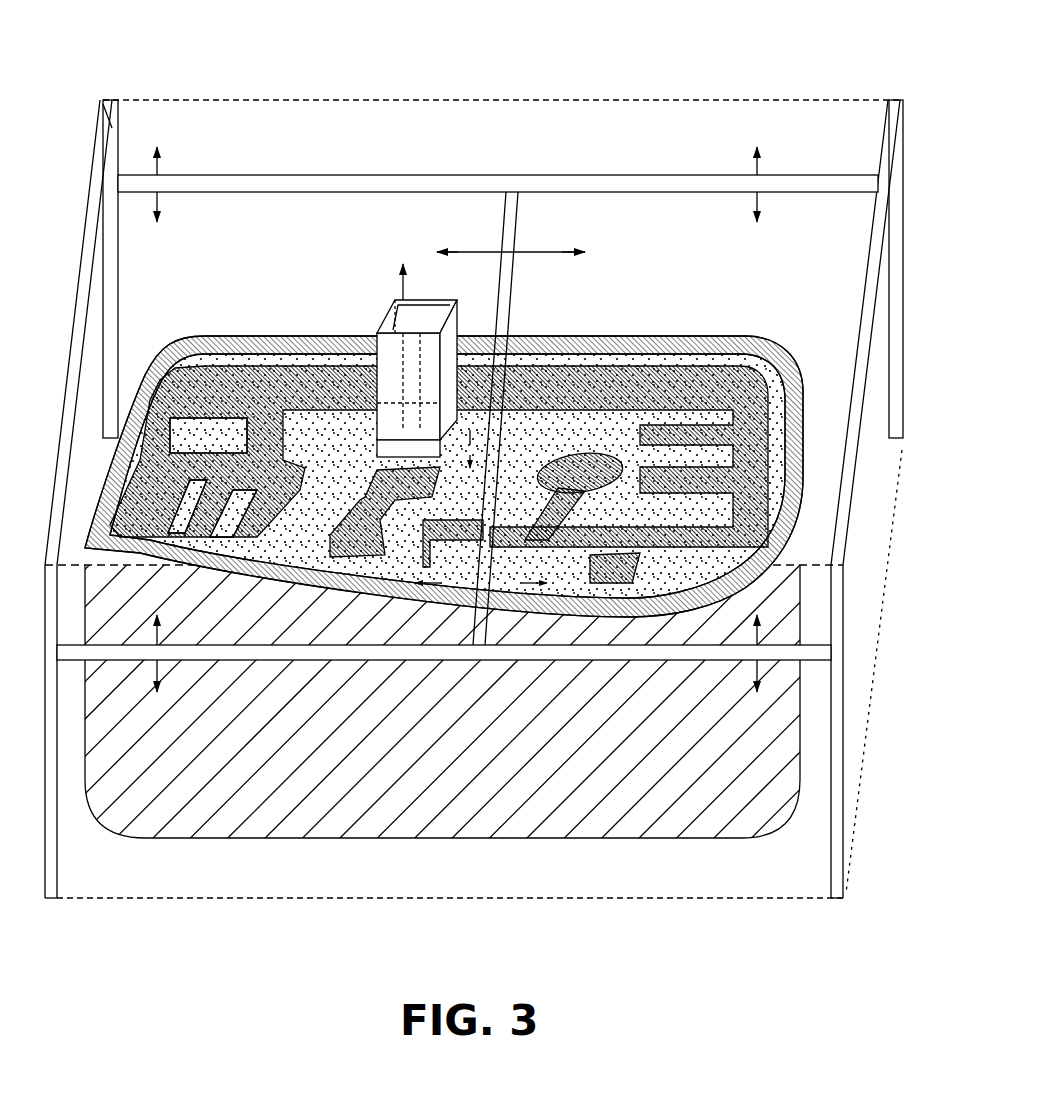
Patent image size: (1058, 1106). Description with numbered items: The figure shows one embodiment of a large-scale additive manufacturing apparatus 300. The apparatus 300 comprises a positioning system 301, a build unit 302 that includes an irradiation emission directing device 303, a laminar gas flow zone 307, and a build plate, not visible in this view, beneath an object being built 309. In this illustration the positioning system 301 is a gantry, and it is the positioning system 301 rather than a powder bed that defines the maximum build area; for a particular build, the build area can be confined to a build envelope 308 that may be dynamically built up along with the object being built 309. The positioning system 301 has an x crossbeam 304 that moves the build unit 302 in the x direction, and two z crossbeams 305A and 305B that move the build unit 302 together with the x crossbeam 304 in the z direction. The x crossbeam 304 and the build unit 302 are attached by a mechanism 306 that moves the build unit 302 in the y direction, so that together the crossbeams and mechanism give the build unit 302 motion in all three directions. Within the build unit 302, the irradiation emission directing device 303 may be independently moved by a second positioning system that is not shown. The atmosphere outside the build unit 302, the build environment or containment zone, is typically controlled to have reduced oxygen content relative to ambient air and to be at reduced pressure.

The large-scale additive manufacturing apparatus 300 is at (540, 80).
The positioning system 301 is at (105, 106).
The build unit 302 is at (393, 293).
The irradiation emission directing device 303 is at (450, 318).
The x crossbeam 304 is at (517, 288).
The z crossbeam 305A is at (258, 175).
The z crossbeam 305B is at (247, 672).
The mechanism 306 is at (490, 417).
The laminar gas flow zone 307 is at (446, 443).
The build envelope 308 is at (743, 356).
The object being built 309 is at (800, 437).